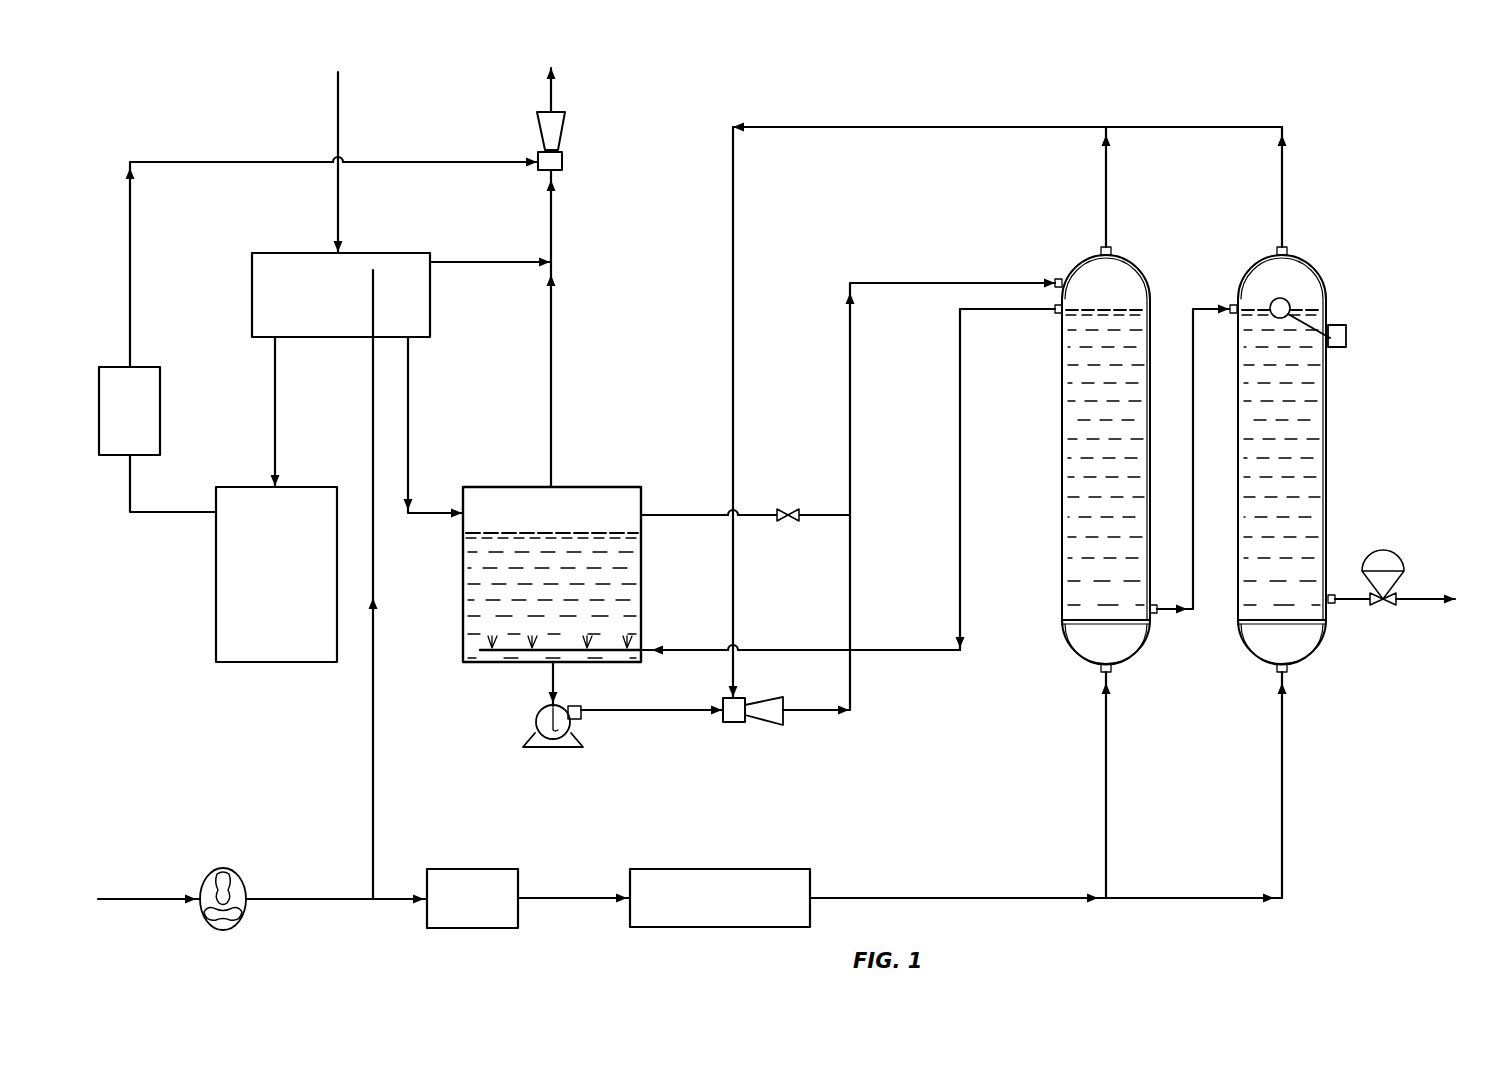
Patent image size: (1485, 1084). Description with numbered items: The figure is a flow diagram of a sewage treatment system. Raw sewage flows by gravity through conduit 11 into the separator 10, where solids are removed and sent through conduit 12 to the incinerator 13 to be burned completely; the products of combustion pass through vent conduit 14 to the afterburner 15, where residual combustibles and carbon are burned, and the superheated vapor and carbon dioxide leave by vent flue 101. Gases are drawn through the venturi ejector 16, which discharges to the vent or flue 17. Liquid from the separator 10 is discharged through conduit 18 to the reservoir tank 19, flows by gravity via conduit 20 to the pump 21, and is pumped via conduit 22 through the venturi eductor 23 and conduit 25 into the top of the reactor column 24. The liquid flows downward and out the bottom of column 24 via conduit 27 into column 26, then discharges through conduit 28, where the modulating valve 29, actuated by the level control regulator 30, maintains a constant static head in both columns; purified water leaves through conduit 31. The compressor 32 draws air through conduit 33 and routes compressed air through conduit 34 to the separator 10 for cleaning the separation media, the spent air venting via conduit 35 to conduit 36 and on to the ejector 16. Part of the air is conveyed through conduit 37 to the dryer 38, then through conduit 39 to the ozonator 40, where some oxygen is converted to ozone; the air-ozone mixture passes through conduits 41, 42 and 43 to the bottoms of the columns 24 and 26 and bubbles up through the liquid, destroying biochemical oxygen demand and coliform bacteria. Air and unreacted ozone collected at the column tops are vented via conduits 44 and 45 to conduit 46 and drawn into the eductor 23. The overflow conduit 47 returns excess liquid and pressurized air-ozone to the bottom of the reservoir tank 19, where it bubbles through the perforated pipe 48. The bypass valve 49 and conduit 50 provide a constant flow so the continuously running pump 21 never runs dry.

The separator 10 is at (341, 295).
The conduit 11 is at (340, 100).
The conduit 12 is at (277, 407).
The incinerator 13 is at (288, 574).
The vent conduit 14 is at (178, 515).
The afterburner 15 is at (176, 411).
The venturi ejector 16 is at (560, 140).
The vent or flue 17 is at (549, 86).
The conduit 18 is at (410, 407).
The reservoir tank 19 is at (552, 574).
The conduit 20 is at (556, 686).
The pump 21 is at (536, 724).
The conduit 22 is at (640, 710).
The venturi eductor 23 is at (772, 725).
The reactor column 24 is at (1138, 270).
The conduit 25 is at (925, 283).
The column 26 is at (1314, 270).
The conduit 27 is at (1195, 522).
The conduit 28 is at (1348, 601).
The modulating valve 29 is at (1386, 562).
The level control regulator 30 is at (1346, 335).
The conduit 31 is at (1415, 599).
The compressor 32 is at (232, 868).
The conduit 33 is at (118, 898).
The conduit 34 is at (375, 757).
The conduit 35 is at (478, 262).
The conduit 36 is at (553, 228).
The conduit 37 is at (378, 896).
The dryer 38 is at (472, 898).
The conduit 39 is at (566, 897).
The ozonator 40 is at (720, 898).
The conduit 41 is at (925, 897).
The conduit 42 is at (1108, 792).
The conduit 43 is at (1284, 792).
The conduit 44 is at (1108, 207).
The conduit 45 is at (1284, 207).
The conduit 46 is at (1003, 127).
The overflow conduit 47 is at (962, 492).
The perforated pipe 48 is at (608, 648).
The bypass valve 49 is at (791, 507).
The conduit 50 is at (665, 515).
The vent flue 101 is at (132, 300).